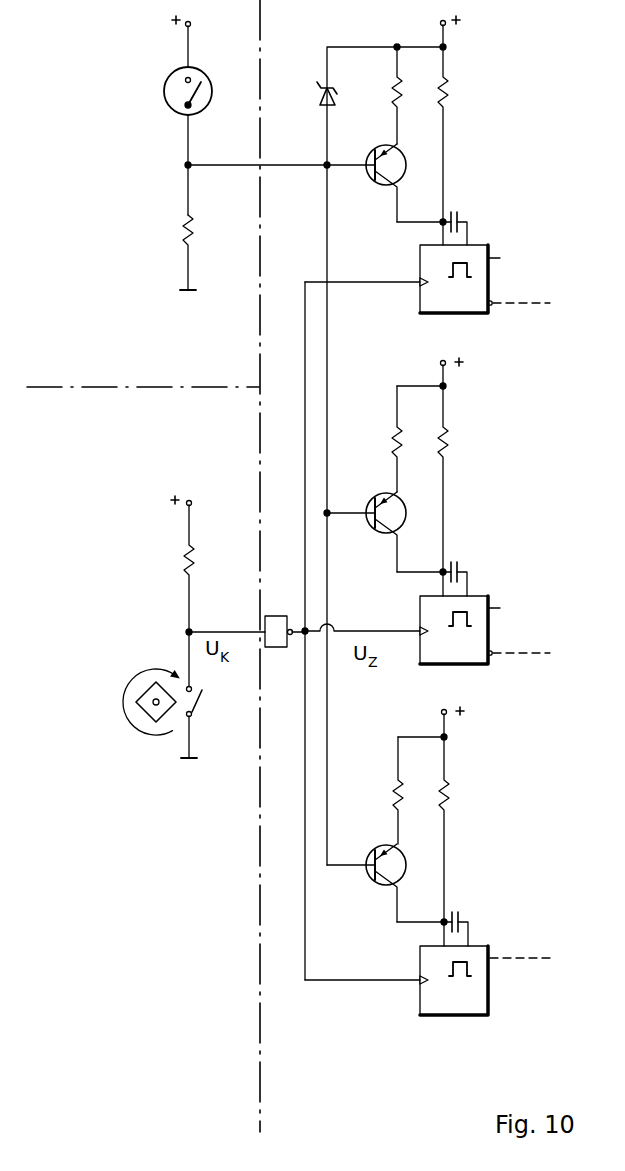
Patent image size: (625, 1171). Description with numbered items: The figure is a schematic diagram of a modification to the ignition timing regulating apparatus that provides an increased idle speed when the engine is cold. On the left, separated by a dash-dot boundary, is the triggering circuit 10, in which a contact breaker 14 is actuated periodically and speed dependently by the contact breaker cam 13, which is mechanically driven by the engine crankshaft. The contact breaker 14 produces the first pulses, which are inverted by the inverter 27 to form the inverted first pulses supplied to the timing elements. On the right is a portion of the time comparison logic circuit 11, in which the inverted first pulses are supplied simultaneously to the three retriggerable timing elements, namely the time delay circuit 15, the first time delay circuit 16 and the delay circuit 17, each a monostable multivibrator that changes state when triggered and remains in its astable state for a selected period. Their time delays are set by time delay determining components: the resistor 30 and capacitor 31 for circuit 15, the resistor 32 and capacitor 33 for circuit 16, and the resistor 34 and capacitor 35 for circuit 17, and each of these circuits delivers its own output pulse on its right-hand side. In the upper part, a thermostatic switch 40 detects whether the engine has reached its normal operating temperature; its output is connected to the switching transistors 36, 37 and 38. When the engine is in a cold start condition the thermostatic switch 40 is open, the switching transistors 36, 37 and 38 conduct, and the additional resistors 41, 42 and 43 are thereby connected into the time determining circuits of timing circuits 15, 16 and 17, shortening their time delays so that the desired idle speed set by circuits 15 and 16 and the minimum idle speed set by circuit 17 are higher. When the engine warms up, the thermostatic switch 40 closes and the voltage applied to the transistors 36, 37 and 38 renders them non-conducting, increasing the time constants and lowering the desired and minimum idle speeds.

The triggering circuit 10 is at (173, 1026).
The time comparison logic circuit 11 is at (368, 1048).
The contact breaker cam 13 is at (150, 712).
The contact breaker 14 is at (199, 706).
The time delay circuit 15 is at (488, 250).
The first time delay circuit 16 is at (489, 604).
The delay circuit 17 is at (478, 953).
The inverter 27 is at (272, 622).
The resistor 30 is at (447, 92).
The capacitor 31 is at (461, 216).
The resistor 32 is at (448, 441).
The capacitor 33 is at (460, 566).
The resistor 34 is at (448, 793).
The capacitor 35 is at (461, 910).
The switching transistor 36 is at (378, 182).
The switching transistor 37 is at (380, 530).
The switching transistor 38 is at (380, 884).
The thermostatic switch 40 is at (175, 83).
The additional resistor 41 is at (393, 92).
The additional resistor 42 is at (393, 441).
The additional resistor 43 is at (394, 793).